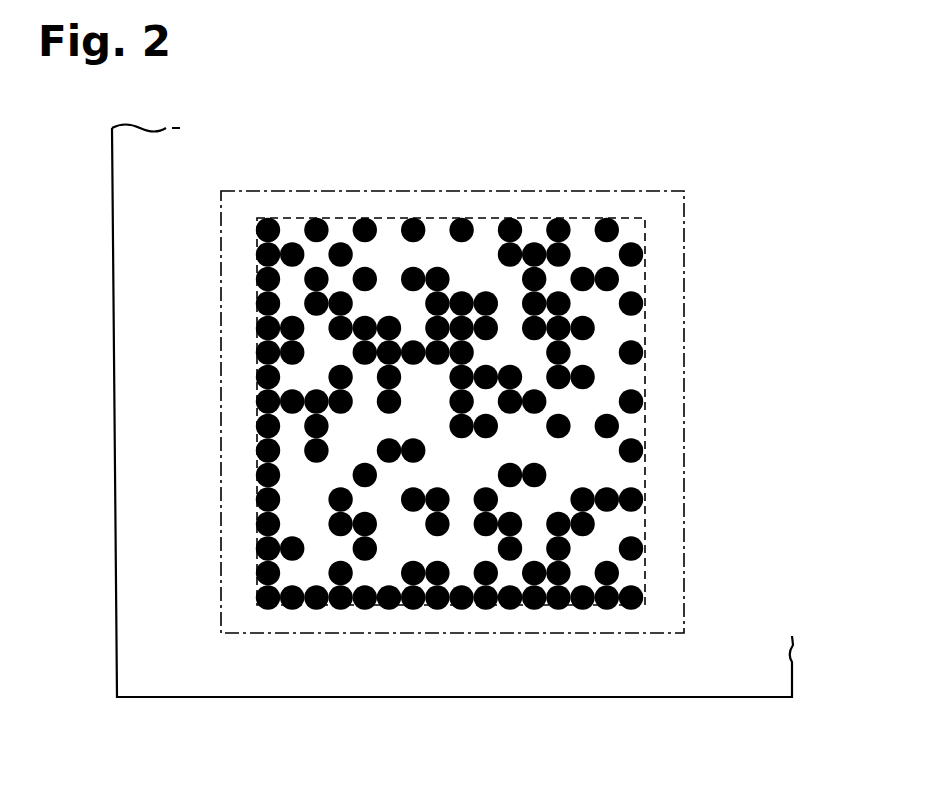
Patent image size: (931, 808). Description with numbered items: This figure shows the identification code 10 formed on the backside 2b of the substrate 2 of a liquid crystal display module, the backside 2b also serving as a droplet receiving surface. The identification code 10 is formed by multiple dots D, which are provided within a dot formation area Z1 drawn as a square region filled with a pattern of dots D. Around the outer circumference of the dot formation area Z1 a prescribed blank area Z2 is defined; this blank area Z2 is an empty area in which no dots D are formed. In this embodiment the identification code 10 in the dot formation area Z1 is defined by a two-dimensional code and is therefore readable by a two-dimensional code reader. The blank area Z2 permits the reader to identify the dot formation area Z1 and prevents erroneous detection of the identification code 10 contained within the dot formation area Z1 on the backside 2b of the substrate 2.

The substrate 2 is at (117, 668).
The backside 2b is at (117, 627).
The identification code 10 is at (500, 413).
The dots D is at (325, 217).
The dot formation area Z1 is at (645, 512).
The blank area Z2 is at (684, 468).